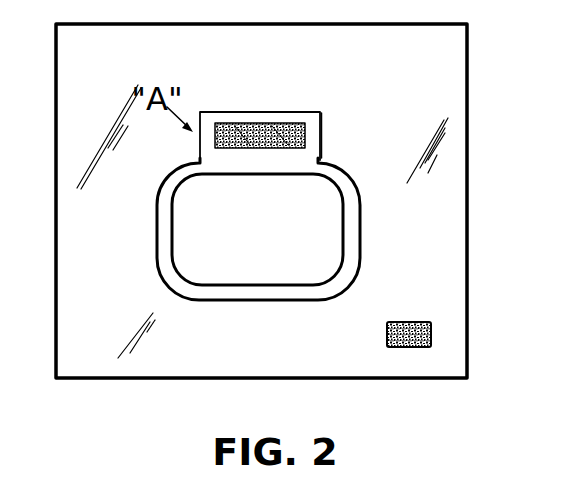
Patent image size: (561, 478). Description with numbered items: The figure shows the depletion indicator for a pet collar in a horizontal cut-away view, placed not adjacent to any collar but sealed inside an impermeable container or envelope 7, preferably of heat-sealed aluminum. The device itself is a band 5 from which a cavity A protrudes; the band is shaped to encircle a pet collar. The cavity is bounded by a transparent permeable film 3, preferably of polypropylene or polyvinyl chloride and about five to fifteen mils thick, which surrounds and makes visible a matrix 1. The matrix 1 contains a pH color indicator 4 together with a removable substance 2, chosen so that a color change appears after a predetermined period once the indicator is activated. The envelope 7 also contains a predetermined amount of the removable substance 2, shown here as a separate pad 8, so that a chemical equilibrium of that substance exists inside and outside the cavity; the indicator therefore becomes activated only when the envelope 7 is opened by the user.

The matrix 1 is at (305, 140).
The removable substance 2 is at (279, 126).
The transparent permeable film 3 is at (209, 116).
The pH color indicator 4 is at (242, 126).
The band 5 is at (175, 171).
The envelope 7 is at (467, 107).
The adhesive pad 8 is at (431, 338).